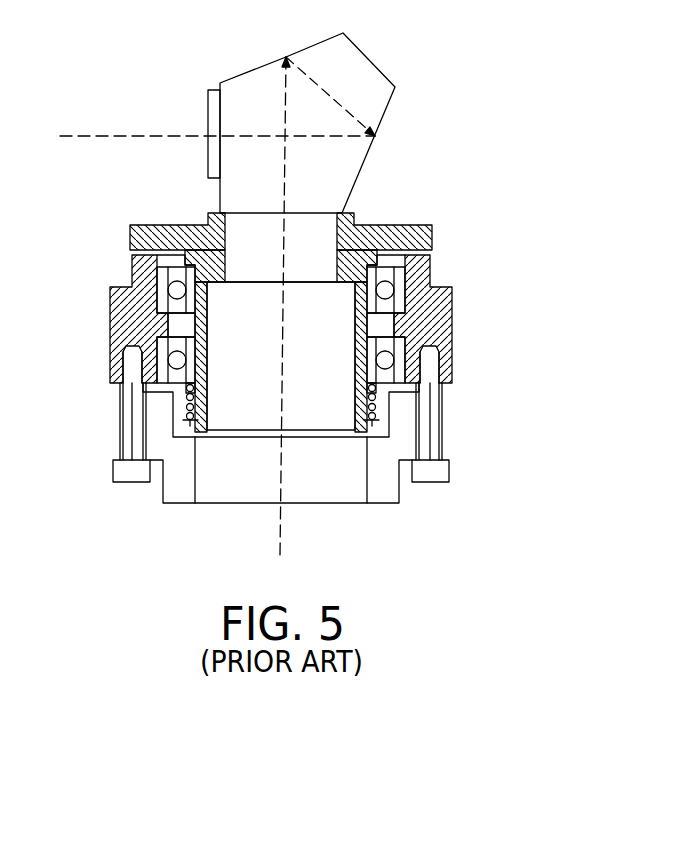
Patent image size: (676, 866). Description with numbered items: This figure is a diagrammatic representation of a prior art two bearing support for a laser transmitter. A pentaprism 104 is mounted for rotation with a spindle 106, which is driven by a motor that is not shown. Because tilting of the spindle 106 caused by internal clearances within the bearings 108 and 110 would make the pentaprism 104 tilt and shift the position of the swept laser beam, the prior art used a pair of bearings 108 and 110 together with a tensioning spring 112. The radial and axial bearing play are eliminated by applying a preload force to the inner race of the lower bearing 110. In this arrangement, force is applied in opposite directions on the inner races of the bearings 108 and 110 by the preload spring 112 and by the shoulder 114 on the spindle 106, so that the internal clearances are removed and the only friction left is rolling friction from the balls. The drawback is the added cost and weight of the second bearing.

The pentaprism 104 is at (353, 63).
The spindle 106 is at (399, 230).
The bearing 108 is at (398, 277).
The lower bearing 110 is at (402, 365).
The tensioning spring 112 is at (173, 405).
The shoulder 114 is at (195, 273).